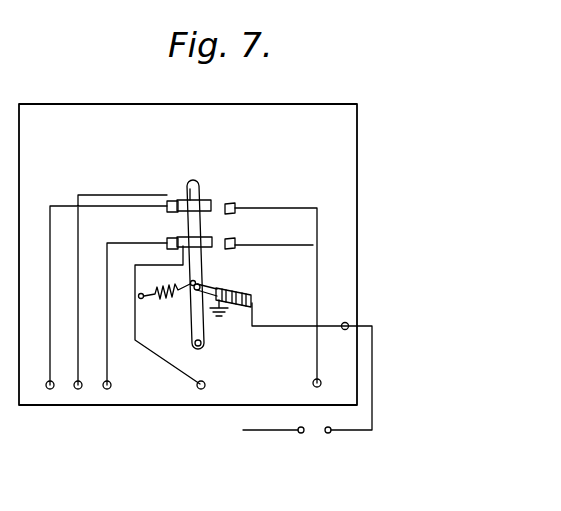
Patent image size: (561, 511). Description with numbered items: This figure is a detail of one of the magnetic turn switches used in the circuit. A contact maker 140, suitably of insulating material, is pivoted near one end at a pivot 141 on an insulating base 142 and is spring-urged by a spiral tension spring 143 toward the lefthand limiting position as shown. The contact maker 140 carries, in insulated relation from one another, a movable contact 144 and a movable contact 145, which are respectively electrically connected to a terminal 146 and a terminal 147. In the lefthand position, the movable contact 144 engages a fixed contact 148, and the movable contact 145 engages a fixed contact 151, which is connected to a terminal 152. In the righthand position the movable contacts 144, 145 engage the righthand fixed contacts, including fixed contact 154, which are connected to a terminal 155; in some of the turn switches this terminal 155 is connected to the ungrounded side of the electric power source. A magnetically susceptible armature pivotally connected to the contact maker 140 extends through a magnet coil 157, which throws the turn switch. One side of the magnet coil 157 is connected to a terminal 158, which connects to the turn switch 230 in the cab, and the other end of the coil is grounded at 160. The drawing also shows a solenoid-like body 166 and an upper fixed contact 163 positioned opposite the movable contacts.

The contact maker 140 is at (201, 193).
The pivot 141 is at (204, 347).
The insulating base 142 is at (188, 254).
The spiral tension spring 143 is at (170, 295).
The movable contact 144 is at (186, 198).
The movable contact 145 is at (191, 242).
The terminal 146 is at (79, 389).
The terminal 147 is at (197, 386).
The fixed contact 148 is at (168, 204).
The fixed contact 151 is at (167, 243).
The terminal 152 is at (118, 376).
The fixed contact 154 is at (236, 246).
The terminal 155 is at (313, 382).
The magnet coil 157 is at (228, 291).
The terminal 158 is at (345, 322).
The ground 160 is at (49, 389).
The fixed contact 163 is at (236, 207).
The solenoid 166 is at (252, 300).
The turn switch 230 is at (308, 444).